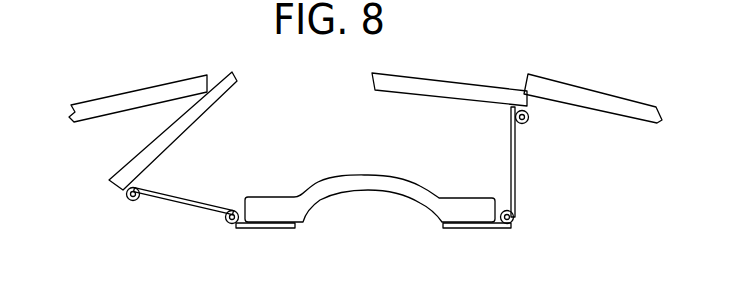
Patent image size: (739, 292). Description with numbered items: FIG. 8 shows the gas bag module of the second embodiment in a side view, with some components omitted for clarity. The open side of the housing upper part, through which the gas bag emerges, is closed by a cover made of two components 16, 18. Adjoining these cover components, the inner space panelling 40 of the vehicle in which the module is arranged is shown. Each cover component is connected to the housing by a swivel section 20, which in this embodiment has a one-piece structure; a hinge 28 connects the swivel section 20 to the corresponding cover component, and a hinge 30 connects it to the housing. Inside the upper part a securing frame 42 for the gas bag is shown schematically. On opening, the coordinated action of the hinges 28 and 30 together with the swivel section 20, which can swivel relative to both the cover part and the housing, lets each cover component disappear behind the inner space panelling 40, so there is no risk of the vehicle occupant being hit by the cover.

The cover component 16 is at (182, 125).
The cover component 18 is at (450, 86).
The swivel section 20 is at (181, 210).
The hinge 28 is at (129, 199).
The hinge 30 is at (233, 224).
The inner space panelling 40 is at (127, 97).
The securing frame 42 is at (376, 183).